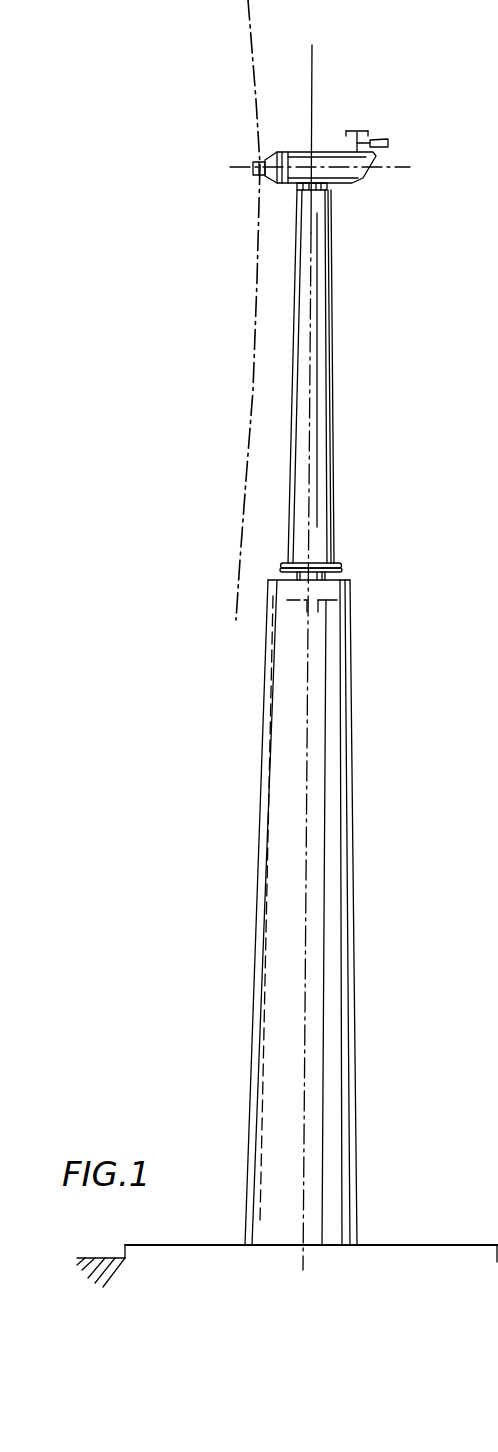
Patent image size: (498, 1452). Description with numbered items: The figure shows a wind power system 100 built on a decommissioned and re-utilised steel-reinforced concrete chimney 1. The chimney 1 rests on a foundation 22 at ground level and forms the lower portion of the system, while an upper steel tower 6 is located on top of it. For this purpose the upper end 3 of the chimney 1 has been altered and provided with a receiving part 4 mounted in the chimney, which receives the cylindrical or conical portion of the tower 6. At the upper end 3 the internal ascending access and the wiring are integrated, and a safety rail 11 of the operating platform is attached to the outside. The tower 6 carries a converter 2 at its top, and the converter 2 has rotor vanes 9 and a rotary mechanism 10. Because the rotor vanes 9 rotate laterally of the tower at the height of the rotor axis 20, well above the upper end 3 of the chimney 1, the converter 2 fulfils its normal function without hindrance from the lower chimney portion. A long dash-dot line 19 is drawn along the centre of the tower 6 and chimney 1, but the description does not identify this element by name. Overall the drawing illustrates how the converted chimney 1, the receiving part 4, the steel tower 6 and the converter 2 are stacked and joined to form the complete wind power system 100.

The chimney 1 is at (320, 733).
The converter 2 is at (350, 168).
The upper end 3 is at (312, 588).
The receiving part 4 is at (340, 571).
The upper steel tower 6 is at (310, 425).
The rotor vanes 9 is at (257, 103).
The rotary mechanism 10 is at (330, 197).
The safety rail 11 is at (337, 562).
The tower axis 19 is at (312, 100).
The rotor axis 20 is at (373, 168).
The foundation 22 is at (412, 1260).
The wind power system 100 is at (226, 518).